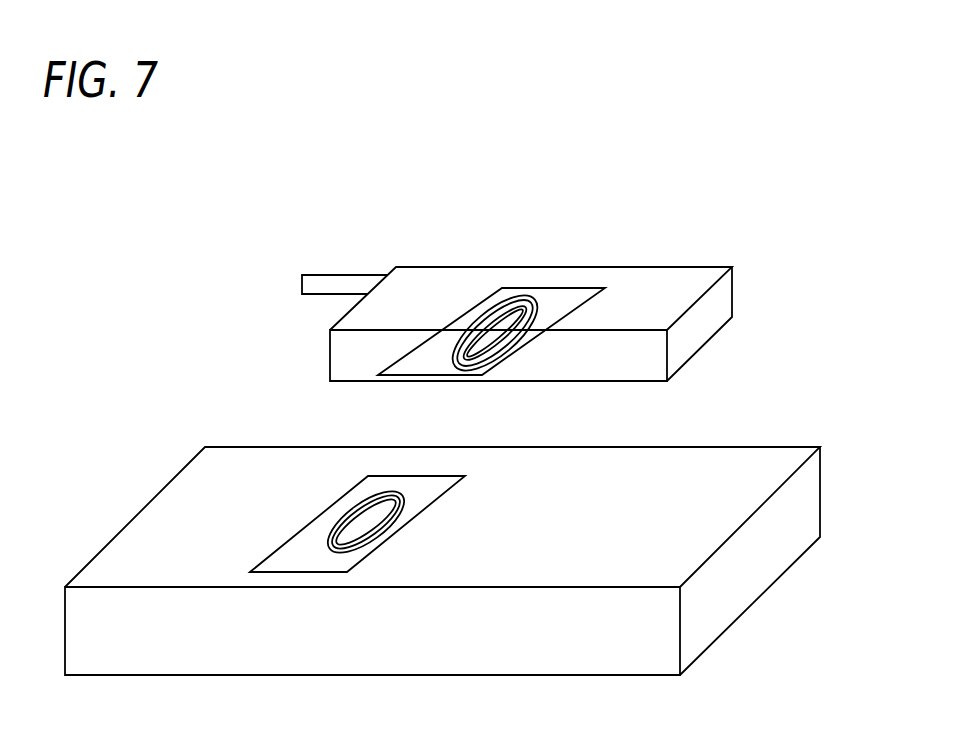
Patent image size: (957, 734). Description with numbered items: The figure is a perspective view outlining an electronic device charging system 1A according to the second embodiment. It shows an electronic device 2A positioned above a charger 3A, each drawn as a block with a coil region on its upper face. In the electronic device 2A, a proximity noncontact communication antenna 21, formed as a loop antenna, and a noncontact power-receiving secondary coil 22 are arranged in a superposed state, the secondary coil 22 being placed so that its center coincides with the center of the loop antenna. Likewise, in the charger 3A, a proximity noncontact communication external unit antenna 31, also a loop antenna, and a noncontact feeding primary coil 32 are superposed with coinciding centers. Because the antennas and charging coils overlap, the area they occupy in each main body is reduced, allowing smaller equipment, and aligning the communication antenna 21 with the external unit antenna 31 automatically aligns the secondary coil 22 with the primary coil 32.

The electronic device charging system 1A is at (799, 235).
The electronic device 2A is at (603, 265).
The proximity noncontact communication antenna 21 is at (478, 305).
The noncontact power-receiving secondary coil 22 is at (528, 302).
The charger 3A is at (768, 447).
The proximity noncontact communication external unit antenna 31 is at (328, 508).
The noncontact feeding primary coil 32 is at (400, 498).